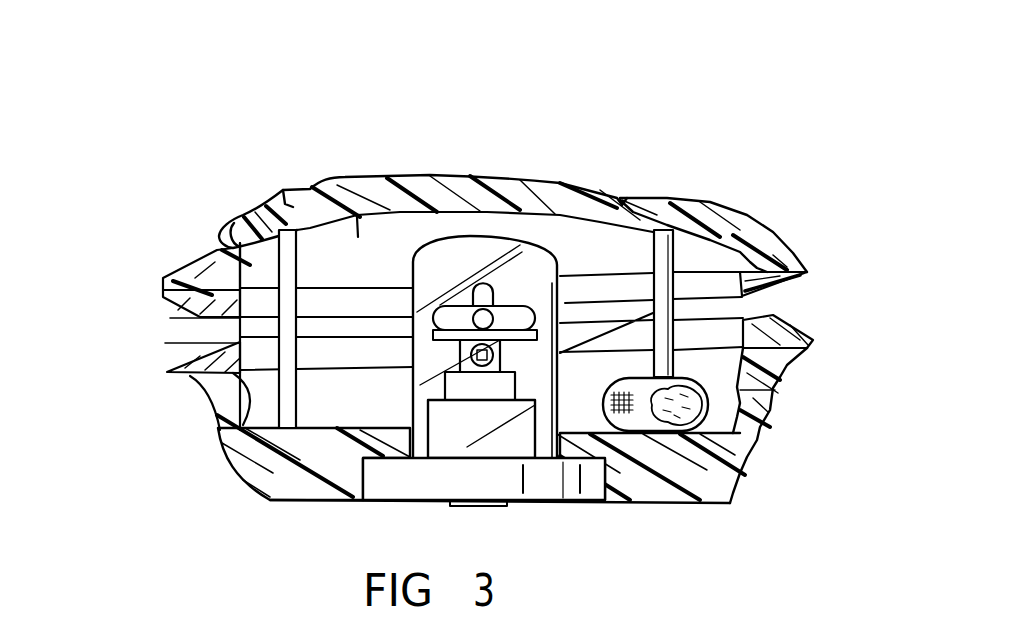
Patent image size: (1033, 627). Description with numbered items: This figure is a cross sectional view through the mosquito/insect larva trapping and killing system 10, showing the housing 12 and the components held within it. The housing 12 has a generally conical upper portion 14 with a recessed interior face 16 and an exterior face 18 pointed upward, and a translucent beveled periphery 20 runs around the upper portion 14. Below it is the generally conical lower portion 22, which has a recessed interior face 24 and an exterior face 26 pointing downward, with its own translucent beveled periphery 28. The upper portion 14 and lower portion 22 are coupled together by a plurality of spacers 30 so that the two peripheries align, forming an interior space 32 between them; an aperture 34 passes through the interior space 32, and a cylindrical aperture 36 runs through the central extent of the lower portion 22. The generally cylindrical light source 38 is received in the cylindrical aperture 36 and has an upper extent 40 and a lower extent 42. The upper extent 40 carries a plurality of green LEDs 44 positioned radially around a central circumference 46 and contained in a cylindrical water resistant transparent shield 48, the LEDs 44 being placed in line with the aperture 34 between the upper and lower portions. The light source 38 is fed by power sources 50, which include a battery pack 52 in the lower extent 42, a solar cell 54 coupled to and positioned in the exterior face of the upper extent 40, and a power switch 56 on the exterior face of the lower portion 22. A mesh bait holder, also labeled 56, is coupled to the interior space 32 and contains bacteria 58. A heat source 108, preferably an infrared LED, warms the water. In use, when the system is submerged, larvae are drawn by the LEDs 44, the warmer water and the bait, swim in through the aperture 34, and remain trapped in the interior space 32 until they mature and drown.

The mosquito/insect larva trapping and killing system 10 is at (702, 155).
The housing 12 is at (773, 257).
The upper portion 14 is at (230, 220).
The recessed interior face 16 is at (335, 187).
The exterior face 18 is at (480, 186).
The translucent beveled periphery 20 is at (215, 317).
The lower portion 22 is at (268, 500).
The recessed interior face 24 is at (221, 430).
The exterior face 26 is at (315, 500).
The translucent beveled periphery 28 is at (170, 372).
The spacers 30 is at (268, 235).
The interior space 32 is at (717, 388).
The aperture 34 is at (218, 330).
The cylindrical aperture 36 is at (613, 470).
The light source 38 is at (565, 463).
The upper extent 40 is at (496, 302).
The lower extent 42 is at (488, 460).
The green LEDs 44 is at (445, 300).
The central circumference 46 is at (417, 258).
The cylindrical water resistant transparent shield 48 is at (545, 290).
The power sources 50 is at (428, 438).
The battery pack 52 is at (450, 440).
The solar cell 54 is at (742, 293).
The power switch / bait holder 56 is at (500, 501).
The bacteria 58 is at (670, 431).
The heat source 108 is at (515, 232).